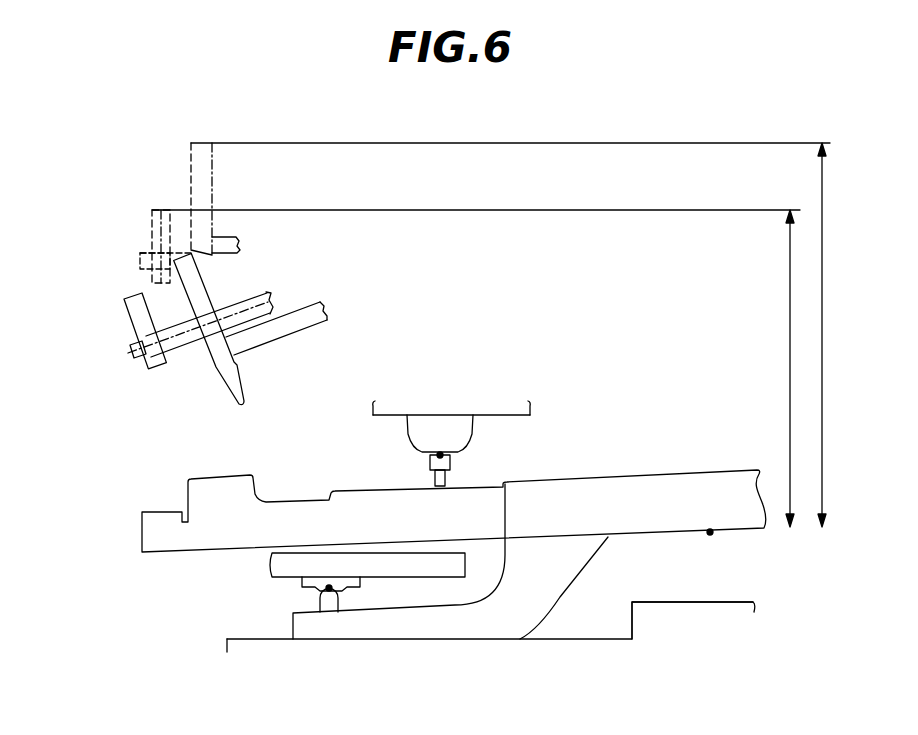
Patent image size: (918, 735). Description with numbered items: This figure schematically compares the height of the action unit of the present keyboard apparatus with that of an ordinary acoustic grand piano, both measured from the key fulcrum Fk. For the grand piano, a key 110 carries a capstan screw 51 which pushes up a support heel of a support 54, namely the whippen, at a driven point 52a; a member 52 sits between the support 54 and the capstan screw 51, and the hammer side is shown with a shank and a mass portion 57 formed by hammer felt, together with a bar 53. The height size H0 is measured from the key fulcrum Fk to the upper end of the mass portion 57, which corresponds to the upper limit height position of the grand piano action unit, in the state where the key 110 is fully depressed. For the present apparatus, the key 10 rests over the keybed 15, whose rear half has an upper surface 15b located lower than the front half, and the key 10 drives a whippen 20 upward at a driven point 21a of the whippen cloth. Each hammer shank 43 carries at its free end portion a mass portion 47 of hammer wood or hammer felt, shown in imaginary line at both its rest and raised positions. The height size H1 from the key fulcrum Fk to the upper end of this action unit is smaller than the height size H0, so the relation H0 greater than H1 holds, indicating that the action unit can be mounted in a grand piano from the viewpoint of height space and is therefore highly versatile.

The mass portion 57 is at (212, 163).
The mass portion 47 is at (152, 223).
The hammer shank 43 is at (178, 338).
The support bar 53 is at (302, 328).
The support 54 is at (517, 420).
The cup-shaped member 52 is at (463, 430).
The driven point 52a is at (452, 462).
The capstan screw 51 is at (432, 463).
The key 110 is at (136, 532).
The whippen 20 is at (270, 562).
The driven point 21a is at (329, 590).
The key 10 is at (286, 619).
The upper surface 15b is at (582, 638).
The keybed 15 is at (665, 606).
The key fulcrum Fk is at (710, 534).
The height size H0 is at (524, 335).
The height size H1 is at (476, 368).